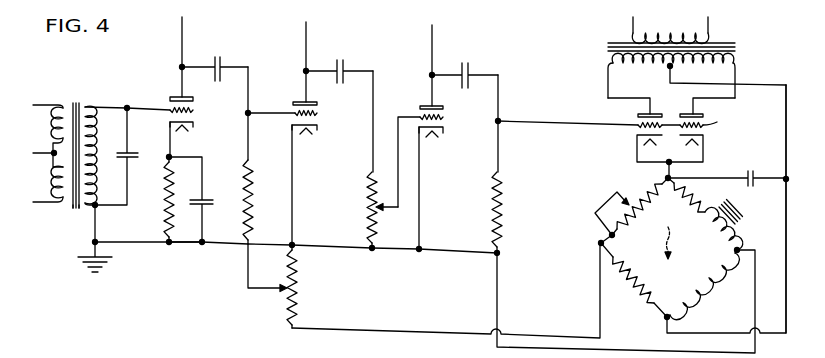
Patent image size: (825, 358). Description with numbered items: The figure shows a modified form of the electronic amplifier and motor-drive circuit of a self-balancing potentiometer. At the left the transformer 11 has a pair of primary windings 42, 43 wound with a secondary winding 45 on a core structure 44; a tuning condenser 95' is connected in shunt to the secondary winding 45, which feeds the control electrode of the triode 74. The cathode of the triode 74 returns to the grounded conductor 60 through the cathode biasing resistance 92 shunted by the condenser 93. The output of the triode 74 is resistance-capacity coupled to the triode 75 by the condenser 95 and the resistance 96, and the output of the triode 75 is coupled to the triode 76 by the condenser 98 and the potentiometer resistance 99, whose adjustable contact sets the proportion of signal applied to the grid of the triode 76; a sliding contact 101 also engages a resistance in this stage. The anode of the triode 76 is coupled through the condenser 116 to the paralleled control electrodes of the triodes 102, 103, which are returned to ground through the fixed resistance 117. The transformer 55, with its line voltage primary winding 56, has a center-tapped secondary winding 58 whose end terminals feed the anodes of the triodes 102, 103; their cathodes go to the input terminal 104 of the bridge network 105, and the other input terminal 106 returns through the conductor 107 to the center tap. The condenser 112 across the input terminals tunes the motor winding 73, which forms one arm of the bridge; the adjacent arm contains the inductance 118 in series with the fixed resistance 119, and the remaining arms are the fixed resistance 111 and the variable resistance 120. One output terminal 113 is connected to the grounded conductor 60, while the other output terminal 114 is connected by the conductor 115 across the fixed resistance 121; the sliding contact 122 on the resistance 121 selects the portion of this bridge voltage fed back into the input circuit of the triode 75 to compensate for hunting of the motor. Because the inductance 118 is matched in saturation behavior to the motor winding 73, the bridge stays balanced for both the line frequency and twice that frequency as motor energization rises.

The transformer 11 is at (73, 100).
The primary winding 42 is at (52, 129).
The primary winding 43 is at (52, 183).
The core structure 44 is at (72, 212).
The secondary winding 45 is at (95, 162).
The tuning condenser 95' is at (124, 156).
The triode 74 is at (168, 104).
The condenser 95 is at (215, 56).
The cathode biasing resistance 92 is at (165, 203).
The condenser 93 is at (213, 201).
The grounded conductor 60 is at (180, 245).
The resistance 96 is at (243, 197).
The triode 75 is at (295, 106).
The condenser 98 is at (342, 62).
The potentiometer resistance 99 is at (368, 206).
The sliding contact 101 is at (383, 209).
The triode 76 is at (422, 110).
The condenser 116 is at (466, 62).
The fixed resistance 117 is at (487, 208).
The fixed resistance 121 is at (298, 284).
The sliding contact 122 is at (281, 290).
The conductor 115 is at (416, 330).
The line voltage primary winding 56 is at (632, 28).
The transformer 55 is at (606, 46).
The secondary winding 58 is at (652, 64).
The conductor 107 is at (786, 137).
The triode 102 is at (633, 118).
The triode 103 is at (706, 125).
The input terminal 104 is at (667, 178).
The condenser 112 is at (748, 164).
The variable resistance 120 is at (637, 197).
The output terminal 114 is at (600, 243).
The fixed resistance 111 is at (636, 280).
The input terminal 106 is at (660, 317).
The fixed resistance 119 is at (697, 206).
The inductance 118 is at (720, 238).
The output terminal 113 is at (739, 248).
The motor winding 73 is at (688, 293).
The bridge network 105 is at (688, 215).